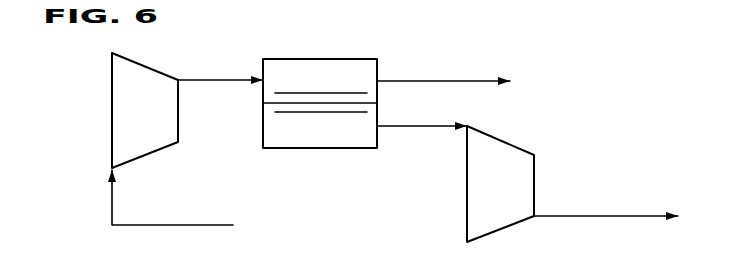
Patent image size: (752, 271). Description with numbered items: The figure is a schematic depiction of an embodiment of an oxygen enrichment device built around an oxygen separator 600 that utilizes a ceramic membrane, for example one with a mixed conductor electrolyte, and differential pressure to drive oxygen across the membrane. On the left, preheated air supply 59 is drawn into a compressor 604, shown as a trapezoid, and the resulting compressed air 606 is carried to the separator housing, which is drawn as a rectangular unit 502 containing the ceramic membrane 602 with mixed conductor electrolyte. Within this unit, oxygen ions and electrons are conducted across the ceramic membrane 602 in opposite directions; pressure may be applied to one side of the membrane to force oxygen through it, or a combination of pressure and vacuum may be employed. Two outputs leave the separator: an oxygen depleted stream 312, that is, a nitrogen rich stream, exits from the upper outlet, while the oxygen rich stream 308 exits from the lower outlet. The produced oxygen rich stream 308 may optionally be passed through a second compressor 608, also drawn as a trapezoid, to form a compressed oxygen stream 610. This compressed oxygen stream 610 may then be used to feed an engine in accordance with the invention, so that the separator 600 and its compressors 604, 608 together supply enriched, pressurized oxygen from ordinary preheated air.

The oxygen separator 600 is at (78, 122).
The compressor 604 is at (160, 123).
The air supply 59 is at (152, 227).
The compressed air 606 is at (214, 79).
The separation unit 502 is at (320, 74).
The ceramic membrane 602 is at (287, 105).
The oxygen depleted stream 312 is at (415, 80).
The oxygen rich stream 308 is at (414, 128).
The compressor 608 is at (514, 198).
The compressed oxygen stream 610 is at (580, 216).